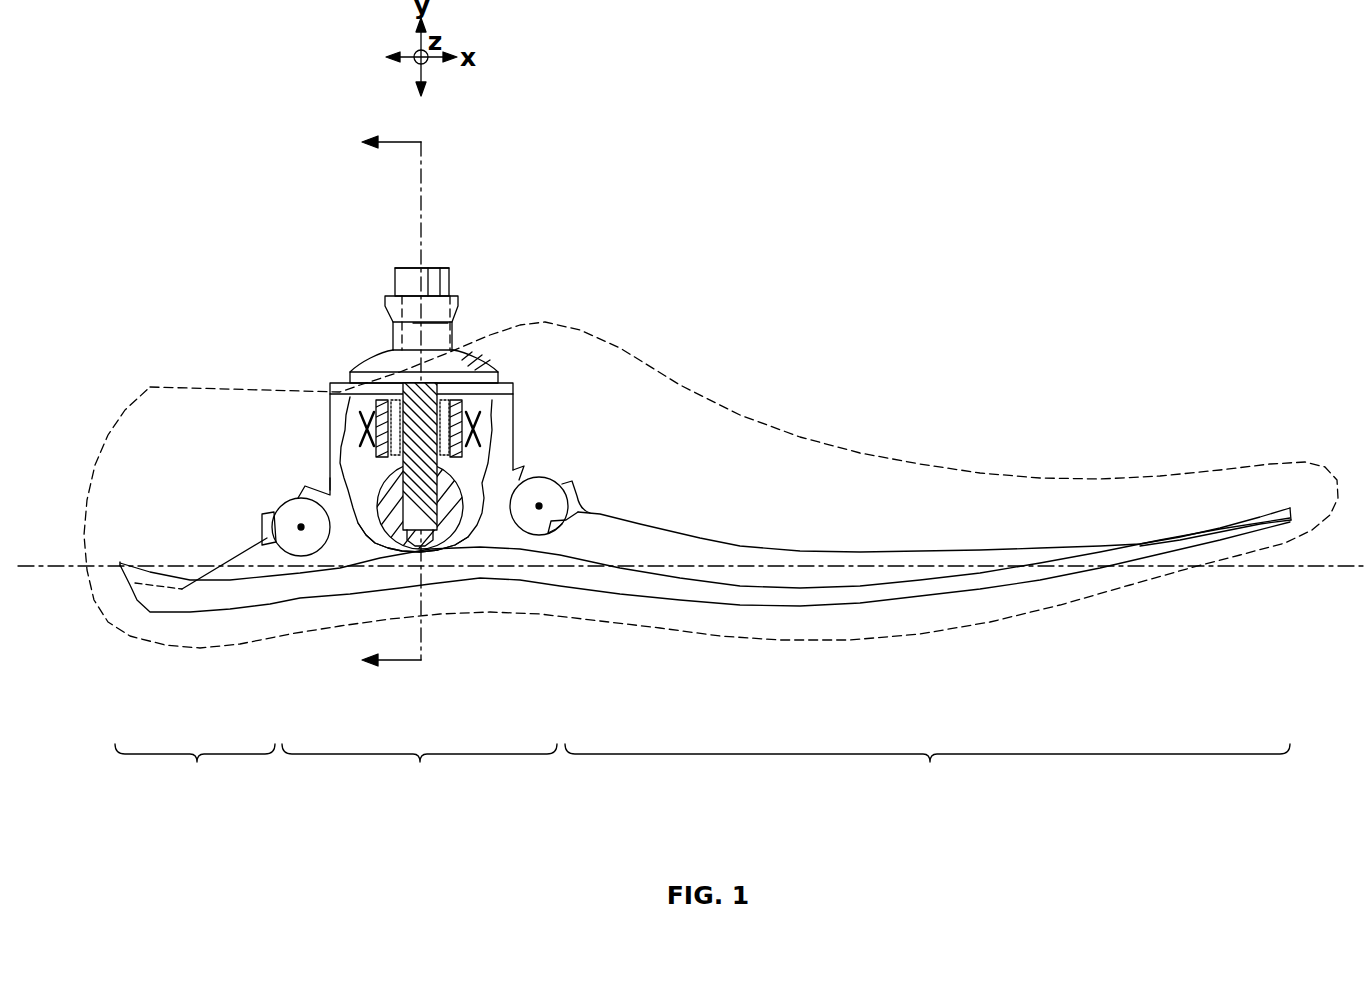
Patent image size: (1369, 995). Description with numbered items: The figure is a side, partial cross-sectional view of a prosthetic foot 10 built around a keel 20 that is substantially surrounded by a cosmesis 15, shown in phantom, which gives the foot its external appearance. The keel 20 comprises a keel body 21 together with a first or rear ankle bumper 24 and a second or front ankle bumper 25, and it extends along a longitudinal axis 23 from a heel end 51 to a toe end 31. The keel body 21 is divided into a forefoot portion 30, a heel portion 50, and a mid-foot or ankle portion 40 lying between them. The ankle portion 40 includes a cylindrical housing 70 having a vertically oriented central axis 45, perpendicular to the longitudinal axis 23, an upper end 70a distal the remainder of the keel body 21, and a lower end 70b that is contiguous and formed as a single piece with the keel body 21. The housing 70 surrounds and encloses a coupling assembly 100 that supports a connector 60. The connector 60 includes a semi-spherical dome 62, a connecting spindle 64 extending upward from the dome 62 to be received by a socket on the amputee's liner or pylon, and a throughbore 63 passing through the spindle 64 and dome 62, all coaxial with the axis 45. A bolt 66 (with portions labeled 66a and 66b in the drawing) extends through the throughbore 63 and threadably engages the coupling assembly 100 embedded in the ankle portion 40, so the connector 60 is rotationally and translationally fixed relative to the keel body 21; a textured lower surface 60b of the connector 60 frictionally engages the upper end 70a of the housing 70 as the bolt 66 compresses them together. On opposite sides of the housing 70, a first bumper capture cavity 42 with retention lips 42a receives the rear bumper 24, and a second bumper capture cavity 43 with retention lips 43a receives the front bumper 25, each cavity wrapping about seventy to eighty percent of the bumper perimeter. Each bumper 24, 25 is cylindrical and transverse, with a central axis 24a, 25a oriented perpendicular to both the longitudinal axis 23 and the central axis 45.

The prosthetic foot 10 is at (228, 160).
The cosmesis 15 is at (745, 437).
The keel 20 is at (850, 553).
The keel body 21 is at (887, 575).
The longitudinal axis 23 is at (1277, 568).
The first or rear ankle bumper 24 is at (293, 510).
The central axis of first bumper 24a is at (302, 528).
The second or front ankle bumper 25 is at (540, 490).
The central axis of second bumper 25a is at (538, 506).
The forefoot portion 30 is at (927, 773).
The toe end 31 is at (1290, 510).
The ankle portion 40 is at (419, 773).
The first bumper capture cavity 42 is at (262, 538).
The retention lip 42a is at (262, 518).
The second bumper capture cavity 43 is at (568, 521).
The retention lip 43a is at (574, 487).
The central axis 45 is at (421, 200).
The heel portion 50 is at (195, 773).
The heel end 51 is at (130, 593).
The connector 60 is at (406, 281).
The lower surface of connector 60b is at (372, 390).
The semi-spherical dome 62 is at (488, 378).
The throughbore 63 is at (386, 297).
The connecting spindle 64 is at (458, 302).
The bolt 66 is at (450, 262).
The bolt head top 66a is at (412, 267).
The bolt shaft 66b is at (393, 515).
The cylindrical housing 70 is at (423, 516).
The upper end of housing 70a is at (490, 378).
The lower end of housing 70b is at (467, 560).
The coupling assembly 100 is at (495, 452).